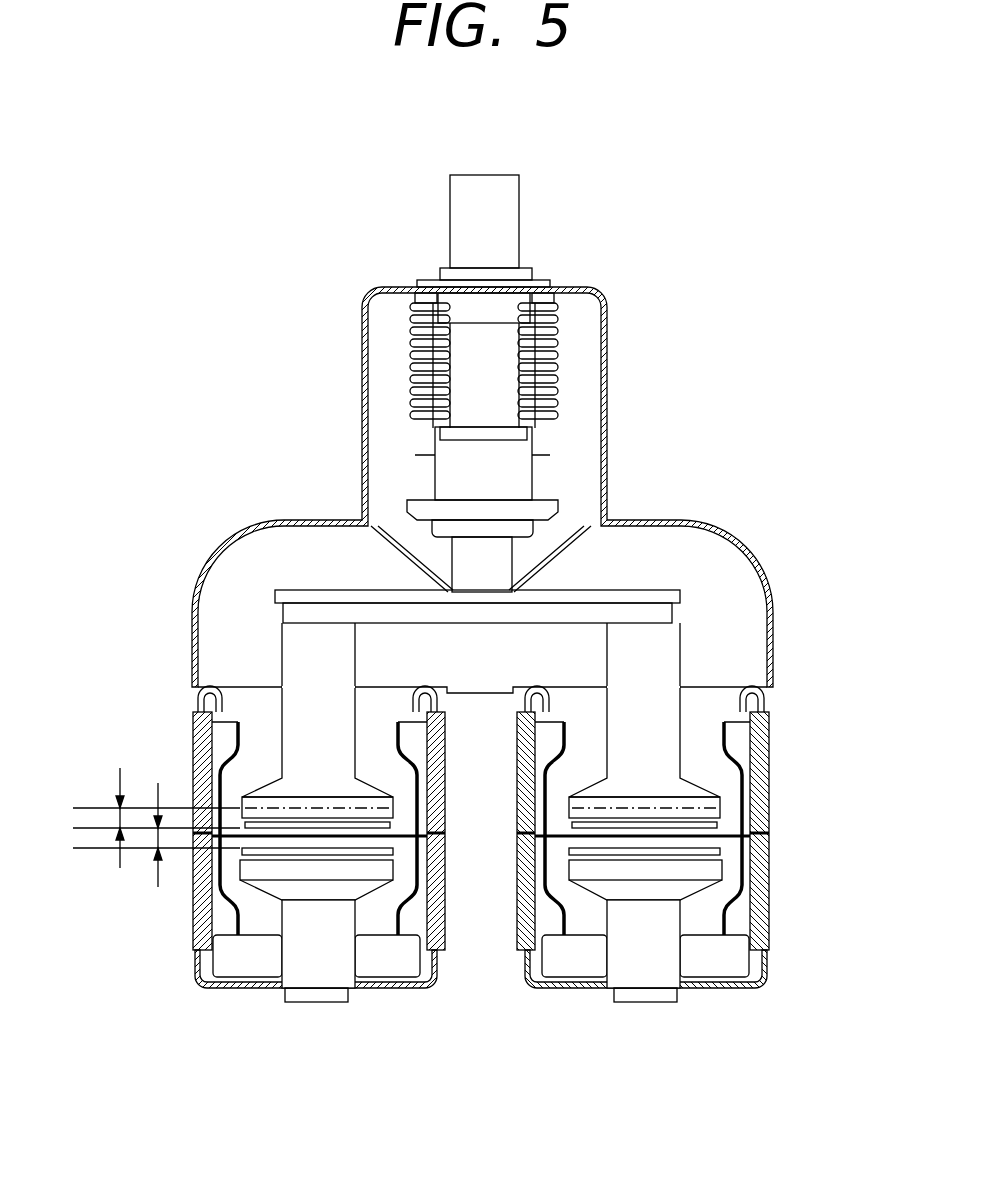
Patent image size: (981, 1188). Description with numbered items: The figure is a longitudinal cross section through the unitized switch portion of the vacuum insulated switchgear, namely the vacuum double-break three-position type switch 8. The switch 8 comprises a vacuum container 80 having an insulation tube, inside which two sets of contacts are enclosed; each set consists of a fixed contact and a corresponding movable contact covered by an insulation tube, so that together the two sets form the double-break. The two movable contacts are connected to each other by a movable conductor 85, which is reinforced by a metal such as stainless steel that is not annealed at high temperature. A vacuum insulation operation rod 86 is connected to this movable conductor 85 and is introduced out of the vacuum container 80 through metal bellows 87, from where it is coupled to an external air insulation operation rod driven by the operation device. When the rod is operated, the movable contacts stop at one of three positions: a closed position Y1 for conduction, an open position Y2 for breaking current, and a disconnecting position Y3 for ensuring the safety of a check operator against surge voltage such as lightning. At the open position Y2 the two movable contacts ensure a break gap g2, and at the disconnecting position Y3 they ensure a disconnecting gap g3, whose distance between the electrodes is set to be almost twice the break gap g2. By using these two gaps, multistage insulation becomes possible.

The vacuum double-break three-position type switch 8 is at (508, 588).
The vacuum container 80 is at (722, 530).
The movable conductor 85 is at (636, 598).
The vacuum insulation operation rod 86 is at (450, 548).
The metal bellows 87 is at (413, 352).
The closed position Y1 is at (90, 850).
The open position Y2 is at (88, 830).
The disconnecting position Y3 is at (85, 806).
The break gap g2 is at (156, 850).
The disconnecting gap g3 is at (117, 804).